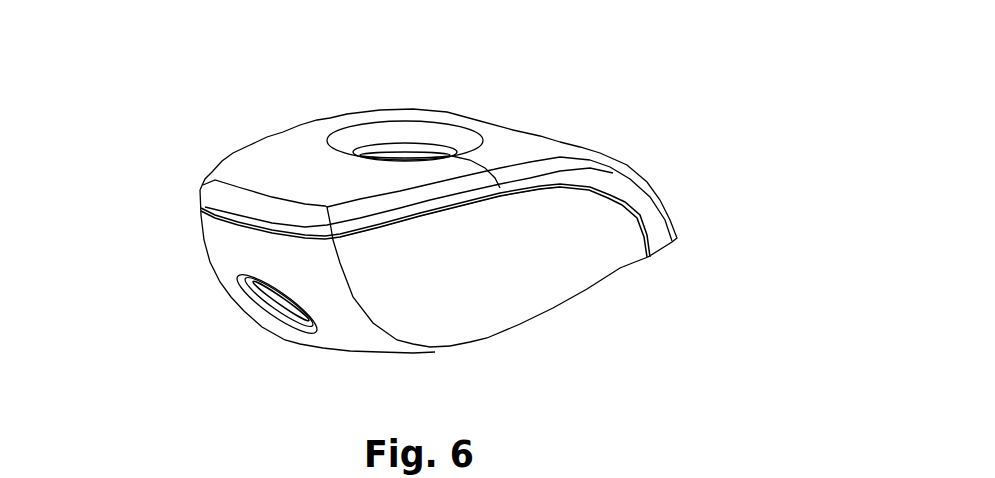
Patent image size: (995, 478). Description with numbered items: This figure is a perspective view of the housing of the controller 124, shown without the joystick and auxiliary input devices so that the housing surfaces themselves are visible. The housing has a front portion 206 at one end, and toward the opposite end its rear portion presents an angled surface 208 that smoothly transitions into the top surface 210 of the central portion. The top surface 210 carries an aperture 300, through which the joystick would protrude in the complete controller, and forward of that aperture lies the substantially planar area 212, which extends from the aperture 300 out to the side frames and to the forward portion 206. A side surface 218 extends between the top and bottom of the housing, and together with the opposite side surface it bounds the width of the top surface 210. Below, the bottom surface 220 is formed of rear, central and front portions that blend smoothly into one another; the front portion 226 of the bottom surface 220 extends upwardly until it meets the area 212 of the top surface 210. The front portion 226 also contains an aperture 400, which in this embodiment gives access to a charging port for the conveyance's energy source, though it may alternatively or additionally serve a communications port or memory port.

The controller 124 is at (606, 49).
The front portion 206 is at (166, 254).
The angled surface 208 is at (661, 200).
The top surface 210 is at (507, 136).
The area or section 212 is at (271, 175).
The side surface 218 is at (503, 279).
The bottom surface 220 is at (428, 361).
The front portion of bottom surface 226 is at (337, 326).
The aperture 300 is at (394, 119).
The aperture 400 is at (267, 322).